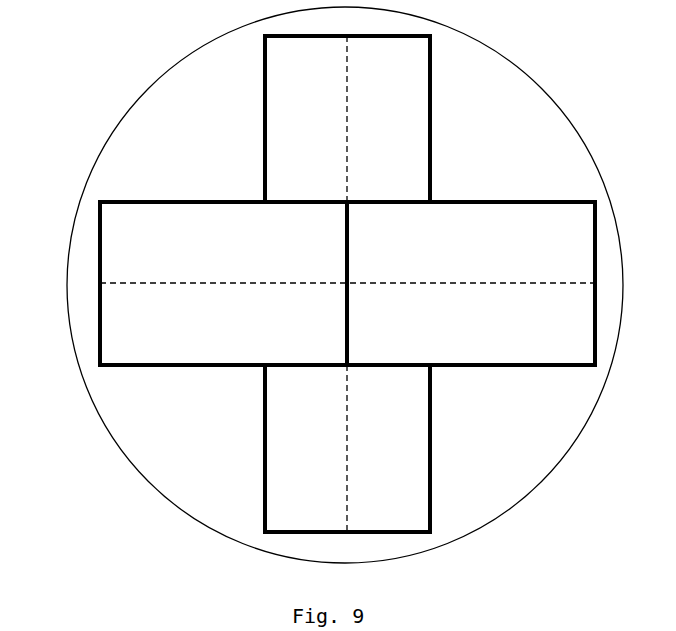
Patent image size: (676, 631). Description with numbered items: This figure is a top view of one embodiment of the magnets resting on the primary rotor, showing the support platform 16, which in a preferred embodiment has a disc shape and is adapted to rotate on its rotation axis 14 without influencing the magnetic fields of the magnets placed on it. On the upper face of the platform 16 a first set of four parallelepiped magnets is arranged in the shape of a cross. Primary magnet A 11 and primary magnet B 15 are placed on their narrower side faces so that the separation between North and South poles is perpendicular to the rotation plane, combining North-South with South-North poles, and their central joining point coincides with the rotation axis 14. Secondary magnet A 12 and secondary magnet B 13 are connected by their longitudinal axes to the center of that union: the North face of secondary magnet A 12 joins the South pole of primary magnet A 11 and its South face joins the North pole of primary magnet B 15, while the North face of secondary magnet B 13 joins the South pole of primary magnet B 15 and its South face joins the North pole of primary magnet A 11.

The primary magnet A of the primary rotor 11 is at (110, 242).
The secondary magnet A of the primary rotor 12 is at (273, 73).
The secondary magnet B of the primary rotor 13 is at (402, 502).
The rotation axis of the primary rotor 14 is at (347, 283).
The primary magnet B of the primary rotor 15 is at (573, 243).
The support platform of the primary rotor 16 is at (530, 120).